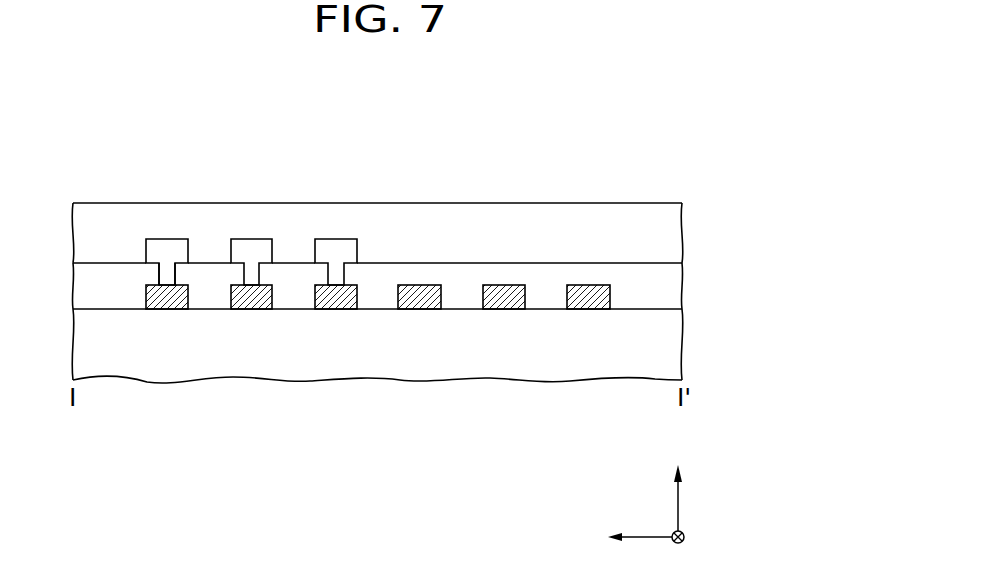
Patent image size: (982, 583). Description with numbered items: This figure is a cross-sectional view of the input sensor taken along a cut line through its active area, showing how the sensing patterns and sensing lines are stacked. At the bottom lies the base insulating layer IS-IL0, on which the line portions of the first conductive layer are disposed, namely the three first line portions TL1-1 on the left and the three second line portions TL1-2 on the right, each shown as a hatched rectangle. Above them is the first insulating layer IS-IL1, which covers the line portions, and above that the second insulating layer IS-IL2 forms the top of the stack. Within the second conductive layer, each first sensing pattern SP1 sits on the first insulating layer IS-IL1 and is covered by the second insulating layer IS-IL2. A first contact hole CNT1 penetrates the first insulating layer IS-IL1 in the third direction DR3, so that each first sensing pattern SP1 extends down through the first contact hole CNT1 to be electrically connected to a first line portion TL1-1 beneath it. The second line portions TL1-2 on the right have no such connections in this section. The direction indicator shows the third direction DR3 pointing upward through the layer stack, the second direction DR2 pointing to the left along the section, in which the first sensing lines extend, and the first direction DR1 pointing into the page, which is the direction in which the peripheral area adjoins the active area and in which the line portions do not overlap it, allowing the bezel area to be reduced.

The second insulating layer IS-IL2 is at (670, 233).
The first insulating layer IS-IL1 is at (670, 289).
The base insulating layer IS-IL0 is at (670, 342).
The first sensing pattern SP1 is at (332, 247).
The first contact hole CNT1 is at (159, 276).
The first line portion TL1-1 is at (340, 303).
The second line portion TL1-2 is at (587, 303).
The first direction DR1 is at (677, 552).
The second direction DR2 is at (618, 539).
The third direction DR3 is at (677, 485).